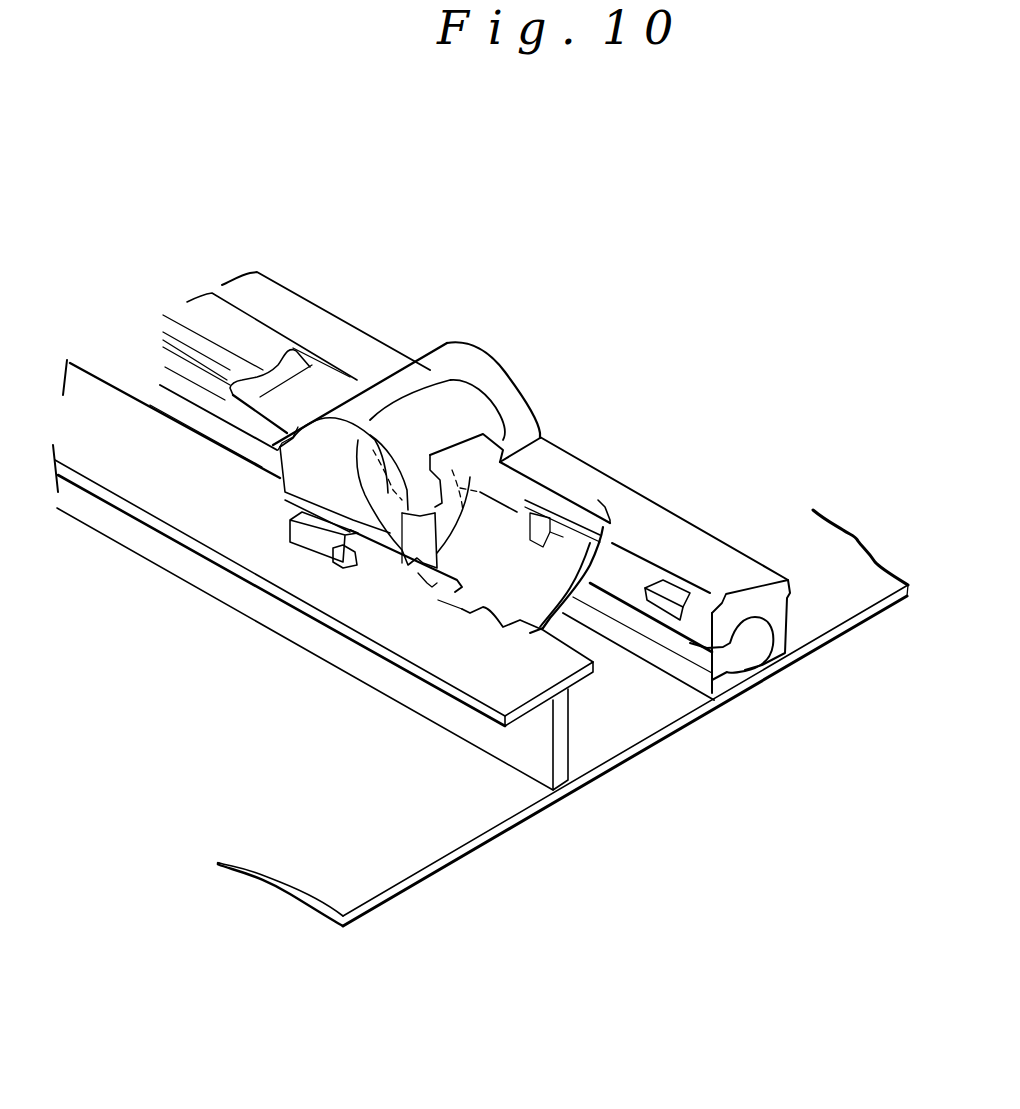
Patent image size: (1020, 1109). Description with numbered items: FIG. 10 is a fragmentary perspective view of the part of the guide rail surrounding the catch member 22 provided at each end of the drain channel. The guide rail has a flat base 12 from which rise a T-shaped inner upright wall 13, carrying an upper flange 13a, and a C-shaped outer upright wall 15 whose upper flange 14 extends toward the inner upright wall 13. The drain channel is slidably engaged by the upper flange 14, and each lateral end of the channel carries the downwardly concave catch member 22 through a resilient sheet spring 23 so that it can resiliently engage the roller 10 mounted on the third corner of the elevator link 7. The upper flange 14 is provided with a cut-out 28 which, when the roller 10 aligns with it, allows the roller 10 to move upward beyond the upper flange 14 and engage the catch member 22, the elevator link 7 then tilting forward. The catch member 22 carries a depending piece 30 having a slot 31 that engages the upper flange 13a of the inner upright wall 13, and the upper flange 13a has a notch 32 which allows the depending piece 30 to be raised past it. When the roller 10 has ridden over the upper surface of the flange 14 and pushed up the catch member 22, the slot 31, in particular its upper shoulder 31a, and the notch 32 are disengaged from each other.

The elevator link 7 is at (550, 490).
The roller 10 is at (500, 417).
The flat base 12 is at (653, 737).
The inner upright wall 13 is at (553, 753).
The upper flange 13a is at (523, 678).
The upper flange 14 is at (683, 597).
The outer upright wall 15 is at (750, 658).
The catch member 22 is at (478, 352).
The resilient sheet spring 23 is at (328, 385).
The cut-out 28 is at (640, 569).
The depending piece 30 is at (332, 472).
The slot 31 is at (343, 530).
The upper shoulder 31a is at (383, 553).
The notch 32 is at (472, 612).